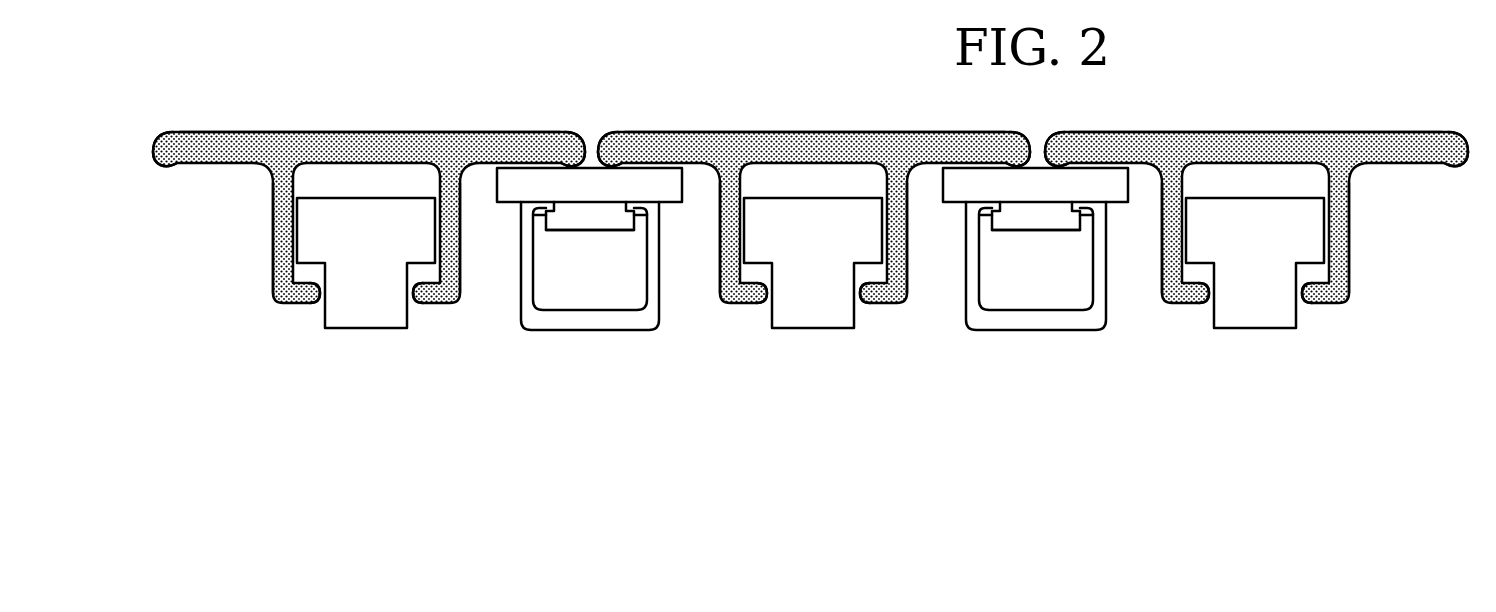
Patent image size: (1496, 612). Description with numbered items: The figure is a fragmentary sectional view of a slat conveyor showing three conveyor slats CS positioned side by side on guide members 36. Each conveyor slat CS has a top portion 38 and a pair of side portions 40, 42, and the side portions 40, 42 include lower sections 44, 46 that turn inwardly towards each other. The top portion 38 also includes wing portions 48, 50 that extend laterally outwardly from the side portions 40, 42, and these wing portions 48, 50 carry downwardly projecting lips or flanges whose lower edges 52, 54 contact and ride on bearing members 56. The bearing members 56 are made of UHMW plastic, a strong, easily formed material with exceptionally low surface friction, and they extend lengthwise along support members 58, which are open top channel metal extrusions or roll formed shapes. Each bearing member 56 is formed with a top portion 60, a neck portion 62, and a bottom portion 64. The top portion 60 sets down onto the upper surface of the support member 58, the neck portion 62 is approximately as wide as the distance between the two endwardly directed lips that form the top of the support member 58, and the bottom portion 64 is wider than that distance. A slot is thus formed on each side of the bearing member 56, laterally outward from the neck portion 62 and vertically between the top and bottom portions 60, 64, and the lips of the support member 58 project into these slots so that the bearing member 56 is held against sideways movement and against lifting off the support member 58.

The guide member 36 is at (362, 307).
The top portion 38 is at (313, 131).
The side portion 40 is at (272, 248).
The side portion 42 is at (456, 264).
The lower section 44 is at (298, 306).
The lower section 46 is at (435, 306).
The wing portion 48 is at (163, 146).
The wing portion 50 is at (573, 136).
The lower edge 52 is at (158, 170).
The lower edge 54 is at (583, 166).
The bearing member 56 is at (608, 220).
The support member 58 is at (584, 323).
The top portion 60 is at (510, 196).
The neck portion 62 is at (650, 206).
The bottom portion 64 is at (567, 222).
The conveyor slat CS is at (400, 124).